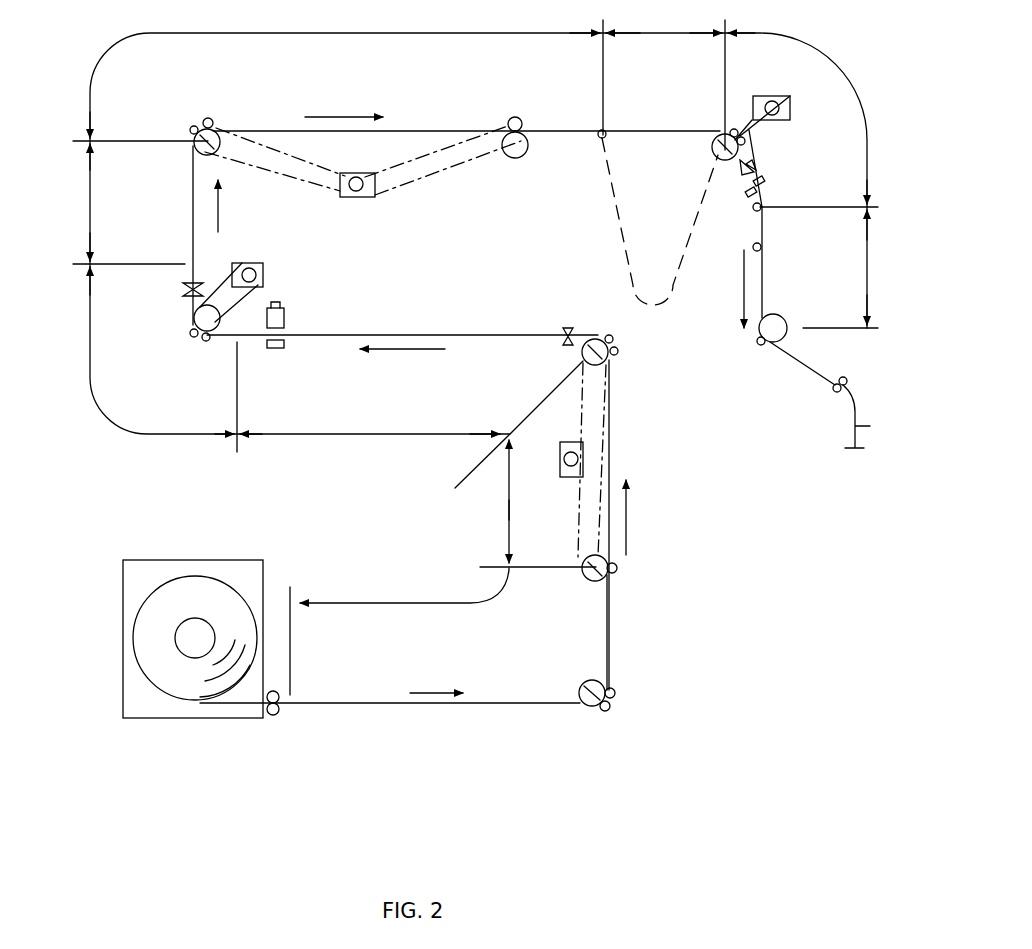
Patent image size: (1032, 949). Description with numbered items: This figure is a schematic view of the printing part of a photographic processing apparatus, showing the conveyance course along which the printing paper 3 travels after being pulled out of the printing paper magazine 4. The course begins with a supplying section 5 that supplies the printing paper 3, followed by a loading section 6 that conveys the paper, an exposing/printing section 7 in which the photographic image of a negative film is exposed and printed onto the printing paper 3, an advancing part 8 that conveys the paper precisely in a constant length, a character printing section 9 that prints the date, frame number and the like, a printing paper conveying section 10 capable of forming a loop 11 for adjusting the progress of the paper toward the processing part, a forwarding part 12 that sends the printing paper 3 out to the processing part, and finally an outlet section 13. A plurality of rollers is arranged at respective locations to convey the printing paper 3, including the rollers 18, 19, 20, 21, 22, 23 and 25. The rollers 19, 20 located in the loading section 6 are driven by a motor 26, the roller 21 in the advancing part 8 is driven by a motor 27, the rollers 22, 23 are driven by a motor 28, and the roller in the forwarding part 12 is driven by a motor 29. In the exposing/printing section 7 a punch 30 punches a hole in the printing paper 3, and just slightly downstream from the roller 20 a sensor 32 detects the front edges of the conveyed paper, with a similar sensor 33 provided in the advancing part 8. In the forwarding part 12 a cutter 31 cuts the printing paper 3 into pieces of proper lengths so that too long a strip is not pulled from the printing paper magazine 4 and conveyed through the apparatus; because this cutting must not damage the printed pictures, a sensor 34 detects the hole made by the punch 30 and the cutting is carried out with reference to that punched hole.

The printing paper 3 is at (870, 426).
The printing paper magazine 4 is at (135, 632).
The supplying section 5 is at (381, 603).
The loading section 6 is at (508, 518).
The exposing/printing section 7 is at (355, 438).
The advancing part 8 is at (88, 342).
The character printing section 9 is at (90, 208).
The printing paper conveying section 10 is at (100, 46).
The loop 11 is at (663, 38).
The forwarding part 12 is at (855, 78).
The outlet section 13 is at (868, 250).
The roller 18 is at (598, 680).
The roller 19 is at (597, 583).
The roller 20 is at (610, 365).
The roller 21 is at (212, 340).
The roller 22 is at (195, 150).
The roller 23 is at (515, 158).
The roller 25 is at (780, 316).
The motor 26 is at (583, 455).
The motor 27 is at (262, 263).
The motor 28 is at (353, 197).
The motor 29 is at (760, 96).
The punch 30 is at (285, 312).
The cutter 31 is at (770, 185).
The sensor 32 is at (563, 330).
The sensor 33 is at (185, 295).
The sensor 34 is at (762, 163).